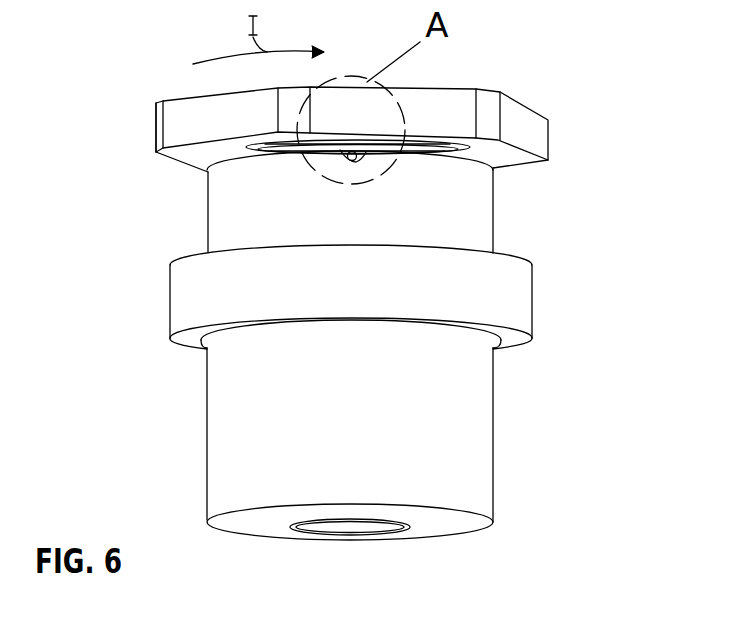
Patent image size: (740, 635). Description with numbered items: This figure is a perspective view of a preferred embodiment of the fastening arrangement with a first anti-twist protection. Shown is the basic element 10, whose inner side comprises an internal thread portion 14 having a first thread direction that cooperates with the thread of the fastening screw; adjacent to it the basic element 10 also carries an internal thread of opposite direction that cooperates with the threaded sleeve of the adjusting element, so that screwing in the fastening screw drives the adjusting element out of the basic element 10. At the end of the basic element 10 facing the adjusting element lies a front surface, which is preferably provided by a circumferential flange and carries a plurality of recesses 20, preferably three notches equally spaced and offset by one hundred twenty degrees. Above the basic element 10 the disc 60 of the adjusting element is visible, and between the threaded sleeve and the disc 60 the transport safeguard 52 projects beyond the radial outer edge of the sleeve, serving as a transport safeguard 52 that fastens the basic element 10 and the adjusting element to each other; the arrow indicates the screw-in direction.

The basic element 10 is at (477, 410).
The internal thread portion 14 is at (362, 527).
The recesses 20 is at (347, 158).
The transport safeguard 52 is at (358, 156).
The disc 60 is at (528, 119).